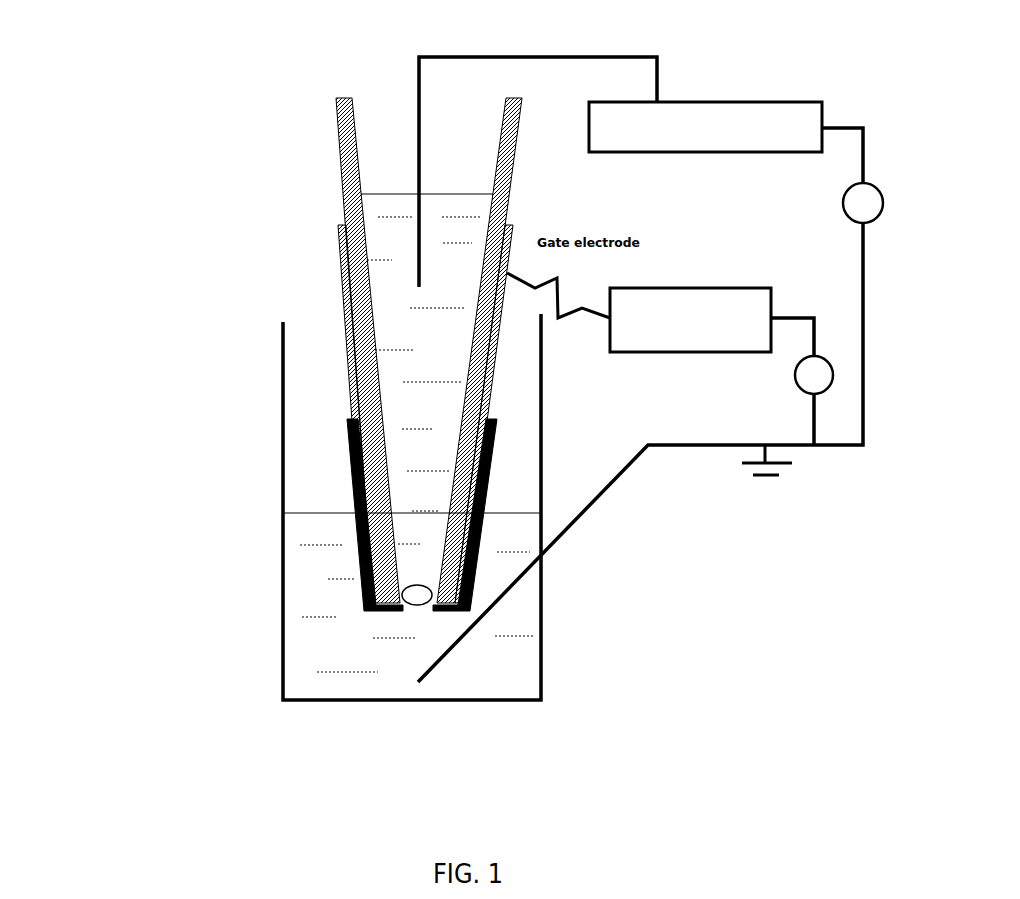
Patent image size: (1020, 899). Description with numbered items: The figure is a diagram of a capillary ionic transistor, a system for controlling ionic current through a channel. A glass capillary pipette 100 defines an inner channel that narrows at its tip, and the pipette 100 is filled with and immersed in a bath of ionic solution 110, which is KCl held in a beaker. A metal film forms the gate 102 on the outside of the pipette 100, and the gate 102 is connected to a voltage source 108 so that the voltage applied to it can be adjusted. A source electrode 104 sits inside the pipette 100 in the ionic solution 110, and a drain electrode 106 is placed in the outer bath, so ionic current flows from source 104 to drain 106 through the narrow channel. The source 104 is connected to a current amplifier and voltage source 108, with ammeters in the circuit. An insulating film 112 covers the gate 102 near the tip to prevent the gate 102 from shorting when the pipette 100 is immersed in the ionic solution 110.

The capillary pipette 100 is at (340, 158).
The gate 102 is at (348, 305).
The source 104 is at (538, 172).
The drain 106 is at (640, 456).
The voltage source 108 is at (736, 273).
The ionic solution 110 is at (412, 447).
The insulating film 112 is at (350, 470).